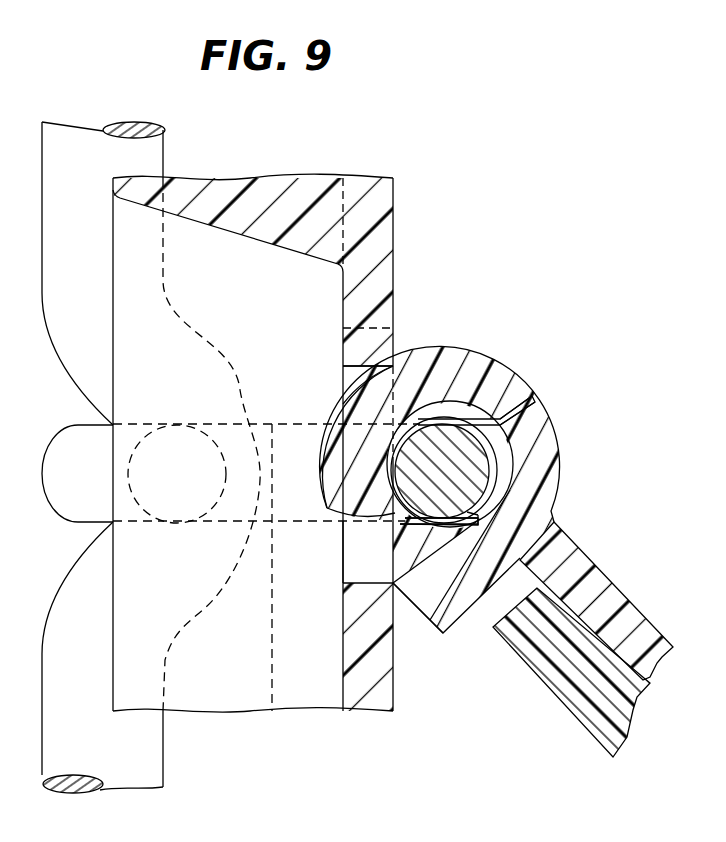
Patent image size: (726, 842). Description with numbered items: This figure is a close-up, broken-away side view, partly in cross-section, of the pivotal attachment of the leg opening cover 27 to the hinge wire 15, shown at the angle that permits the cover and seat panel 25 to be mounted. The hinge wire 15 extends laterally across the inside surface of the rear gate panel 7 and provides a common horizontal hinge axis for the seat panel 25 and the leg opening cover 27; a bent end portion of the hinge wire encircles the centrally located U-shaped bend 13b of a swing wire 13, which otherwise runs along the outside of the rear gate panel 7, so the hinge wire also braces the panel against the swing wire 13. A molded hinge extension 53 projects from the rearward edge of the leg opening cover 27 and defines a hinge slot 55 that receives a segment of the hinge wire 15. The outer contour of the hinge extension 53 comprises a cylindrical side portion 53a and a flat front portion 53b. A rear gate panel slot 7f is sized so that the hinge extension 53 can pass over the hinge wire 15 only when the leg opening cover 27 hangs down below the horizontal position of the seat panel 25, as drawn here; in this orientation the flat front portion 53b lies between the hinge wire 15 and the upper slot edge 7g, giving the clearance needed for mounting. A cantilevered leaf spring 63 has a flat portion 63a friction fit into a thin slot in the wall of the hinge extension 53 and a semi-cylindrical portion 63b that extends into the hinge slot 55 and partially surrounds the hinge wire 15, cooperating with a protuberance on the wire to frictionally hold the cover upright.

The rear gate panel 7 is at (308, 178).
The rear gate panel slot 7f is at (343, 548).
The upper slot edge 7g is at (397, 363).
The swing wire 13 is at (167, 153).
The U-shaped bend 13b is at (213, 335).
The hinge wire 15 is at (441, 447).
The seat panel 25 is at (630, 700).
The leg opening cover 27 is at (610, 577).
The hinge extension 53 is at (558, 453).
The cylindrical side portion 53a is at (558, 453).
The flat front portion 53b is at (343, 397).
The hinge slot 55 is at (412, 583).
The leaf spring 63 is at (490, 372).
The flat portion 63a is at (527, 400).
The semi-cylindrical portion 63b is at (352, 552).